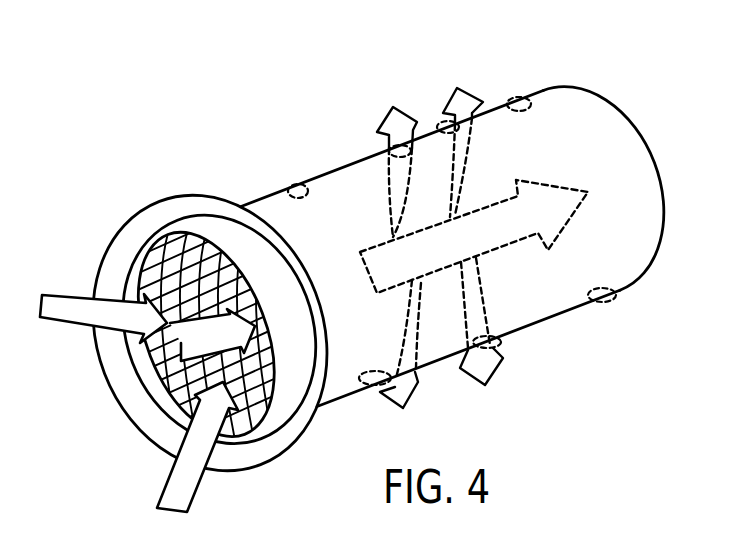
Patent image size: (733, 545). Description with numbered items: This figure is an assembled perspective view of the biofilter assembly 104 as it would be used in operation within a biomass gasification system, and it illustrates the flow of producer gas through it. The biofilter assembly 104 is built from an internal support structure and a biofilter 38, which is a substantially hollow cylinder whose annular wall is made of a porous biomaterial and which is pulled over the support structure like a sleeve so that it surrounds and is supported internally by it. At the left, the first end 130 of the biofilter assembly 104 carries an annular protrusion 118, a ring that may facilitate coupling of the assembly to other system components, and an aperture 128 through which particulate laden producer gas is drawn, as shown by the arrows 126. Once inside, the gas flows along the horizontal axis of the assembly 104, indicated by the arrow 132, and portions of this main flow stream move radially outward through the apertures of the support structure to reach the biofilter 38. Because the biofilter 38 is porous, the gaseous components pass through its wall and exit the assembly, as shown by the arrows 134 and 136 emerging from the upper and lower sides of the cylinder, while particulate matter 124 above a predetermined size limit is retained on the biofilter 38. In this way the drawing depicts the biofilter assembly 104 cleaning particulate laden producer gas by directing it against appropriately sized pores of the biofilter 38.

The biofilter 38 is at (540, 88).
The biofilter assembly 104 is at (236, 157).
The annular protrusion 118 is at (129, 226).
The particulate matter 124 is at (298, 184).
The arrows 126 is at (150, 370).
The aperture 128 is at (186, 255).
The first end 130 is at (100, 235).
The arrow 132 is at (568, 220).
The arrows 134 is at (450, 151).
The outward flow through lower apertures 136 is at (449, 357).